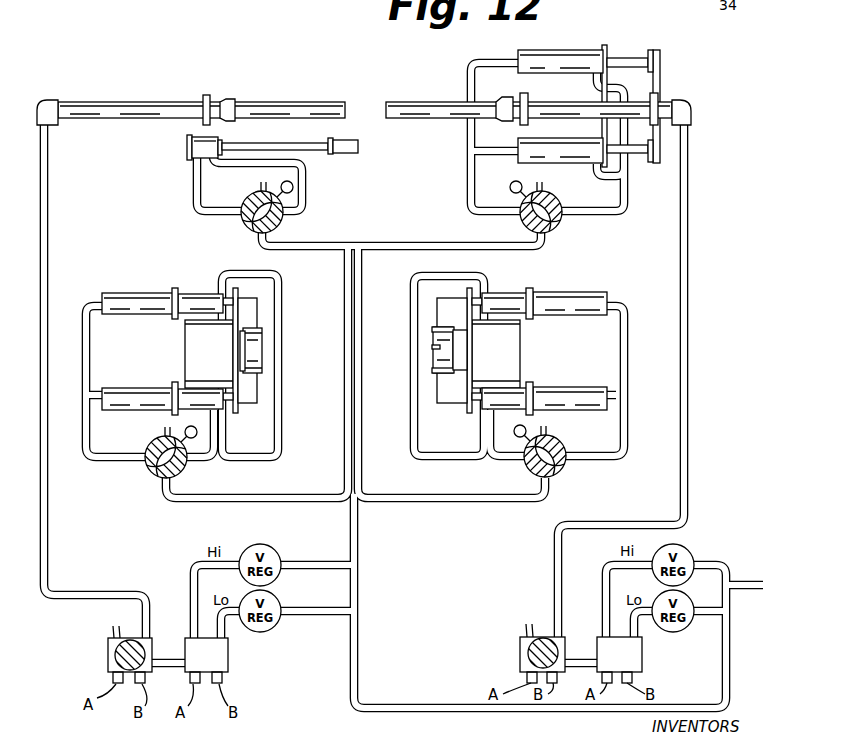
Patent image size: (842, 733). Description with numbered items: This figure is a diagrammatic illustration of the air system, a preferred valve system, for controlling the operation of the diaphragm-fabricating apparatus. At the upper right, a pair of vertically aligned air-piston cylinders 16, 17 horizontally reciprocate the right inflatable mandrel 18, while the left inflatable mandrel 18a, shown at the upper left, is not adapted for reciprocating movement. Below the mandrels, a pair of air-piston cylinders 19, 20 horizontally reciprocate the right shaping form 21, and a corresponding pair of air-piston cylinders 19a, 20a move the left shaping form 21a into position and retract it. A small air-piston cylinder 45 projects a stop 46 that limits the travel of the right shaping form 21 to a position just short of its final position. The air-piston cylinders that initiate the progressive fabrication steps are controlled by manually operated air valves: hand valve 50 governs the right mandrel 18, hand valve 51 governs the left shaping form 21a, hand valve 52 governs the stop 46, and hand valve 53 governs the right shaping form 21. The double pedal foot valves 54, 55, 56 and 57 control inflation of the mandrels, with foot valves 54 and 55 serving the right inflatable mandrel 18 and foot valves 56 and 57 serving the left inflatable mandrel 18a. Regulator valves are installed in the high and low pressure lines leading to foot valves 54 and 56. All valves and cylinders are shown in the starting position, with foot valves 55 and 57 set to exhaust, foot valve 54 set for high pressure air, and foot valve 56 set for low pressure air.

The air-piston cylinder 16 is at (566, 62).
The air-piston cylinder 17 is at (561, 153).
The right inflatable mandrel 18 is at (398, 105).
The left inflatable mandrel 18a is at (275, 106).
The air-piston cylinder 19 is at (573, 300).
The air-piston cylinder 19a is at (145, 300).
The air-piston cylinder 20 is at (562, 392).
The air-piston cylinder 20a is at (147, 396).
The right shaping form 21 is at (435, 358).
The left shaping form 21a is at (255, 347).
The small air-piston cylinder 45 is at (188, 150).
The stop 46 is at (336, 154).
The hand valve 50 is at (554, 226).
The hand valve 51 is at (151, 471).
The hand valve 52 is at (249, 226).
The hand valve 53 is at (562, 471).
The double pedal foot valve 54 is at (630, 656).
The double pedal foot valve 55 is at (527, 656).
The double pedal foot valve 56 is at (221, 657).
The double pedal foot valve 57 is at (110, 657).